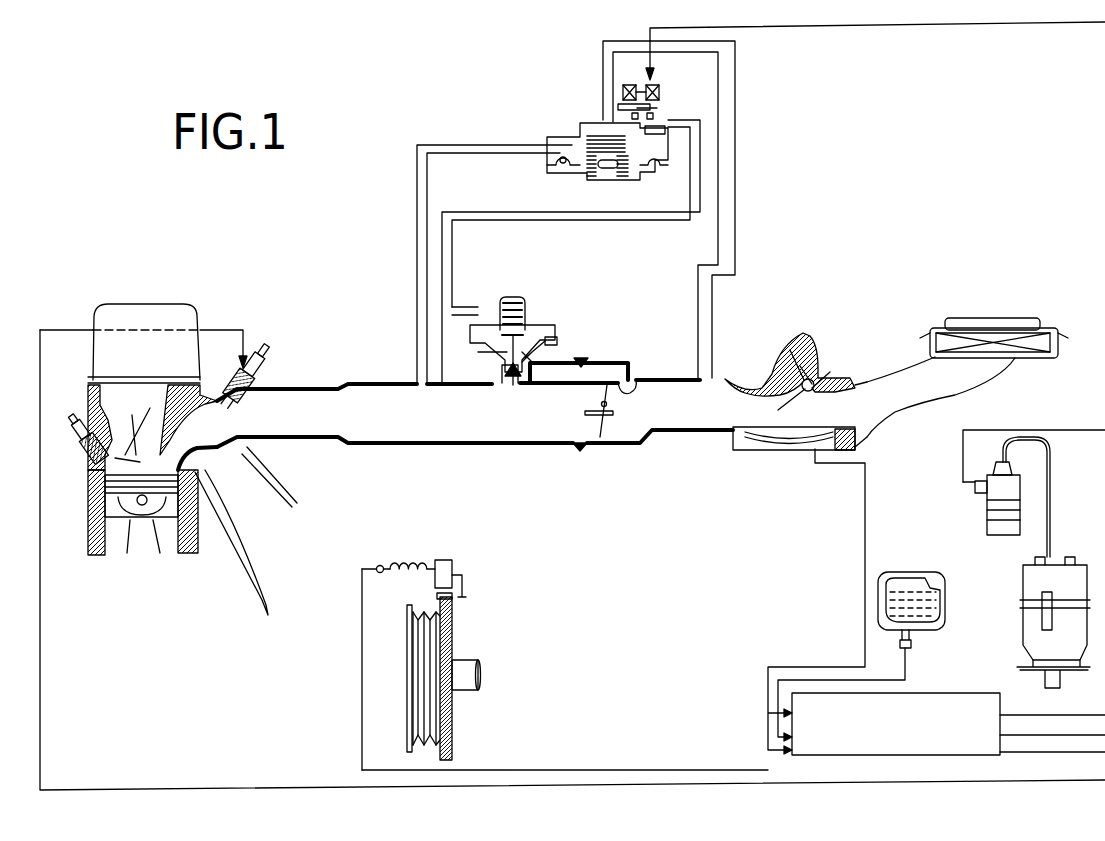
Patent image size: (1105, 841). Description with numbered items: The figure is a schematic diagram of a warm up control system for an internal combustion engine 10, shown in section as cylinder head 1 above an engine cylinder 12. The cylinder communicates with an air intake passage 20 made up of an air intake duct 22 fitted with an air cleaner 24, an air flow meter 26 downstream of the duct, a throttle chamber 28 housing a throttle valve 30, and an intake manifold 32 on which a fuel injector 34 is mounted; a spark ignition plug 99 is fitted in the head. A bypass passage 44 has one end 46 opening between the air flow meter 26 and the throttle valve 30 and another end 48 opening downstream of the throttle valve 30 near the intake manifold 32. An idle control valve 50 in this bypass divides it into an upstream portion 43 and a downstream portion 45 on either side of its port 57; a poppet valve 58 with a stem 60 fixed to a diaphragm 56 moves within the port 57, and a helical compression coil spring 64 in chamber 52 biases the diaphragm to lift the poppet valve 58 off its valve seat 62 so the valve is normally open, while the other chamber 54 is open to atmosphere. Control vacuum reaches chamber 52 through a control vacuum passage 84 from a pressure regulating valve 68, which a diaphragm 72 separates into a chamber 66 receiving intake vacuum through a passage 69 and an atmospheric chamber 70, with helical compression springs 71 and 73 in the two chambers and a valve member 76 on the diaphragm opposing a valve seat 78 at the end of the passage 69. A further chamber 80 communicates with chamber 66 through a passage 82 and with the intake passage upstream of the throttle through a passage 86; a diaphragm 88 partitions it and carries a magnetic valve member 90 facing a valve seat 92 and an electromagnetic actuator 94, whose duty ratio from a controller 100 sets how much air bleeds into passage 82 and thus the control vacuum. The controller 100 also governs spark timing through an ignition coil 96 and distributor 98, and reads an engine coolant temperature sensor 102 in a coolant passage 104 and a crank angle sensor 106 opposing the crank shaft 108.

The cylinder head 1 is at (140, 303).
The internal combustion engine 10 is at (198, 312).
The engine cylinder 12 is at (177, 540).
The air intake passage 20 is at (364, 375).
The air intake duct 22 is at (882, 432).
The air cleaner 24 is at (985, 318).
The air flow meter 26 is at (806, 332).
The throttle chamber 28 is at (634, 424).
The throttle valve 30 is at (609, 392).
The intake manifold 32 is at (366, 446).
The fuel injector 34 is at (253, 362).
The upstream portion of bypass passage 43 is at (606, 365).
The bypass passage 44 is at (585, 357).
The downstream portion of bypass passage 45 is at (492, 373).
The one end of bypass passage 46 is at (633, 388).
The other end of bypass passage 48 is at (455, 380).
The idle control valve 50 is at (512, 296).
The chamber 52 is at (490, 326).
The chamber 54 is at (480, 334).
The diaphragm 56 is at (553, 337).
The valve port 57 is at (534, 354).
The poppet valve 58 is at (513, 386).
The stem 60 is at (497, 332).
The valve seat 62 is at (478, 352).
The helical compression coil spring 64 is at (546, 327).
The chamber 66 is at (552, 134).
The pressure regulating valve 68 is at (697, 107).
The passage 69 is at (415, 237).
The chamber 70 is at (560, 166).
The helical compression spring 71 is at (587, 134).
The diaphragm 72 is at (668, 160).
The helical compression spring 73 is at (593, 177).
The valve member 76 is at (608, 169).
The valve seat 78 is at (630, 154).
The chamber 80 is at (625, 102).
The passage 82 is at (668, 130).
The control vacuum passage 84 is at (699, 214).
The passage 86 is at (736, 237).
The diaphragm 88 is at (690, 106).
The magnetic valve member 90 is at (640, 78).
The valve seat 92 is at (630, 113).
The electromagnetic actuator 94 is at (658, 93).
The ignition coil 96 is at (981, 495).
The distributor 98 is at (1022, 606).
The spark ignition plug 99 is at (80, 434).
The controller 100 is at (922, 693).
The engine coolant temperature sensor 102 is at (912, 649).
The coolant passage 104 is at (903, 580).
The crank angle sensor 106 is at (452, 574).
The crank shaft 108 is at (470, 674).